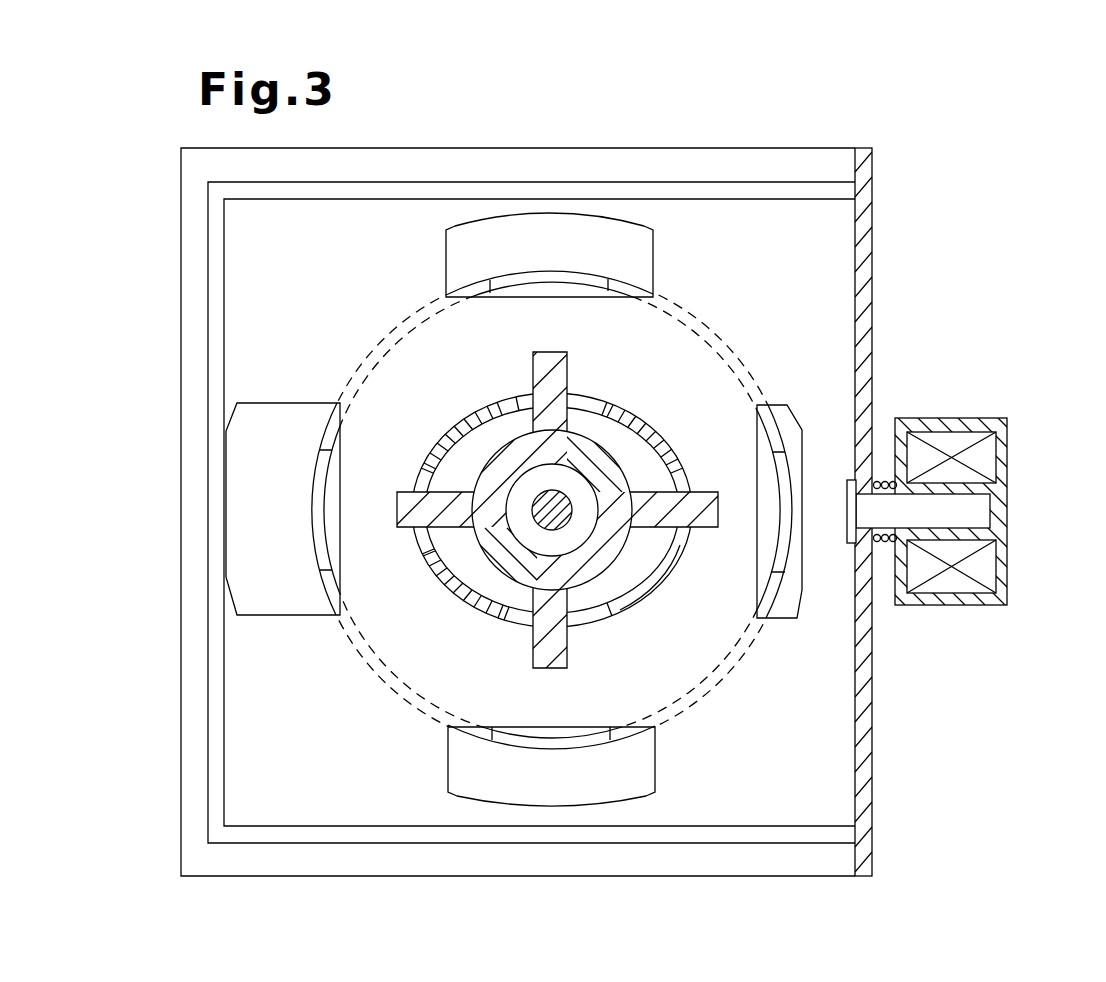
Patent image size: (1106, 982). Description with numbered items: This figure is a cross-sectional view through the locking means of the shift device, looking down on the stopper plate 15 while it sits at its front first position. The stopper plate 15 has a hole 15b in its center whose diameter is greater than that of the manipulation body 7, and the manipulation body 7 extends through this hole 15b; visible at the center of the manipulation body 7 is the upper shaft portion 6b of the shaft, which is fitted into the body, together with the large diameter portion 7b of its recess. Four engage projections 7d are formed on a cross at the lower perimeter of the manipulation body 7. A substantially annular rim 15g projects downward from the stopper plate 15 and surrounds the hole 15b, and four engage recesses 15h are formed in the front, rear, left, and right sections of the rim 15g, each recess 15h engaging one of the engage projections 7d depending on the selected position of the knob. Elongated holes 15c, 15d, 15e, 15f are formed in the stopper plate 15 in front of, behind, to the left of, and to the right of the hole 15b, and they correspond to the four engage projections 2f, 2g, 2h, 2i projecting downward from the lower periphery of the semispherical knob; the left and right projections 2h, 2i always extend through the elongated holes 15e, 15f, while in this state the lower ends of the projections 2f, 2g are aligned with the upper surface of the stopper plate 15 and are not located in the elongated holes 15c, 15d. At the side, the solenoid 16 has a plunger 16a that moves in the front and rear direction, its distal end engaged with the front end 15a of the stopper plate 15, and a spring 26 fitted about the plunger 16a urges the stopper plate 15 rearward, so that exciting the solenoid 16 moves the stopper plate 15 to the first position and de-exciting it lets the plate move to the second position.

The stopper plate 15 is at (562, 512).
The front end of the stopper plate 15a is at (874, 300).
The hole 15b is at (442, 440).
The elongated hole 15c is at (758, 483).
The elongated hole 15d is at (283, 481).
The elongated hole 15e is at (589, 765).
The elongated hole 15f is at (589, 255).
The rim 15g is at (529, 505).
The engage recess 15h is at (612, 398).
The engage projection 2f is at (760, 490).
The engage projection 2g is at (316, 511).
The engage projection 2h is at (548, 756).
The engage projection 2i is at (556, 270).
The manipulation body 7 is at (558, 516).
The large diameter portion 7b is at (586, 546).
The engage projection 7d is at (568, 362).
The upper shaft portion 6b is at (478, 490).
The solenoid 16 is at (912, 486).
The plunger 16a is at (990, 515).
The spring 26 is at (889, 542).